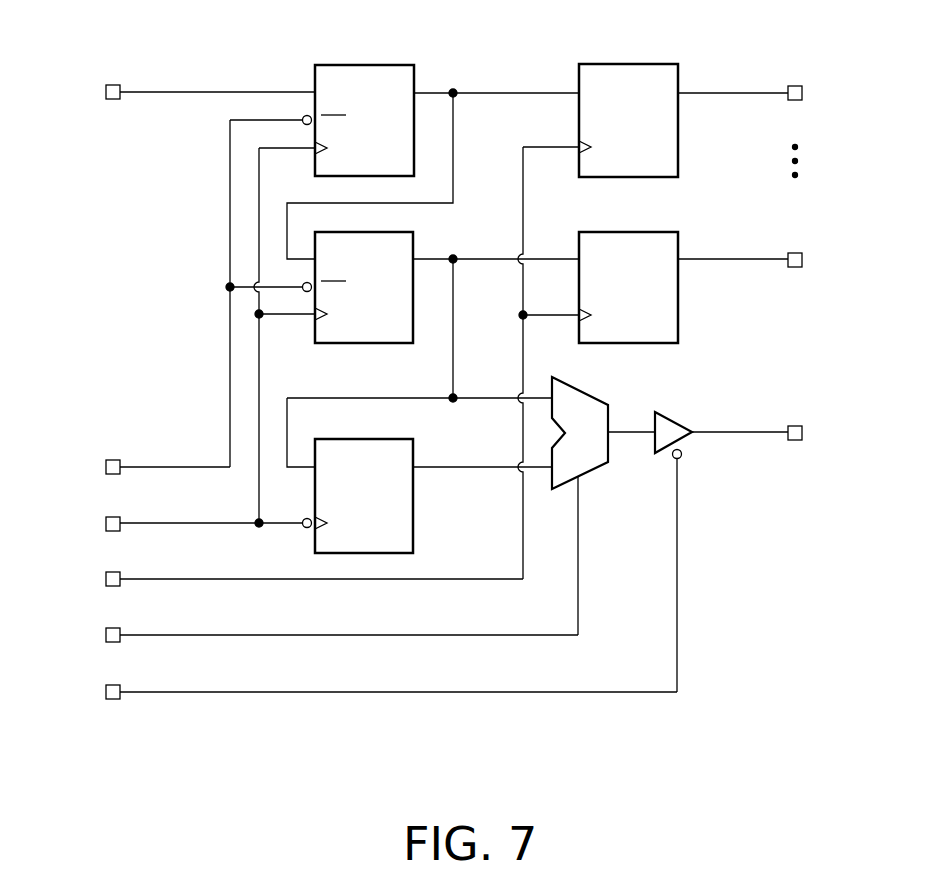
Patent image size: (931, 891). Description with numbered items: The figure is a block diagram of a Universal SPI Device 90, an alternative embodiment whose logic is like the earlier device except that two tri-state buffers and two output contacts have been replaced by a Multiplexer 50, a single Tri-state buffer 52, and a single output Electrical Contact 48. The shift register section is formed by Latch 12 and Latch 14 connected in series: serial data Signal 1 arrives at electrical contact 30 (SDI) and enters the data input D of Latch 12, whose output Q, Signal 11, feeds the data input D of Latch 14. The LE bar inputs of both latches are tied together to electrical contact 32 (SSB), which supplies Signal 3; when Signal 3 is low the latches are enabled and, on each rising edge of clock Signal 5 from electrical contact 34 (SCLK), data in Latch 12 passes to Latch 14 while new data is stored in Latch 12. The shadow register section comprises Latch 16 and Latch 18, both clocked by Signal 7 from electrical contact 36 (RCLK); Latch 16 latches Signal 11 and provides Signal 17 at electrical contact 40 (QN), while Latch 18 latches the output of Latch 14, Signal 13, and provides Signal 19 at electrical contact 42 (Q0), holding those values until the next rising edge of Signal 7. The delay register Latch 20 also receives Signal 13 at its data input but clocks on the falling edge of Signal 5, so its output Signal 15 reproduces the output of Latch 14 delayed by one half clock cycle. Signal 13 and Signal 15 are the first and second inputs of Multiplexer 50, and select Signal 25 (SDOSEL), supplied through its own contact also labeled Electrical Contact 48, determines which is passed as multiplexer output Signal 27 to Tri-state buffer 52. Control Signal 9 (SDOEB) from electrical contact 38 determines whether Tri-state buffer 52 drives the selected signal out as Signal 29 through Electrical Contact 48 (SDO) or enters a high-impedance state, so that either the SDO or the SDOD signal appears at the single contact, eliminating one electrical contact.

The serial data input signal 1 is at (187, 92).
The latch enable signal 3 is at (187, 467).
The clock signal 5 is at (191, 523).
The clock signal 7 is at (191, 579).
The control signal 9 is at (191, 692).
The data output signal of Latch 12 11 is at (433, 92).
The latch 12 is at (383, 159).
The data output signal of Latch 14 13 is at (433, 259).
The latch 14 is at (383, 326).
The data output signal of Latch 20 15 is at (433, 467).
The latch 16 is at (647, 152).
The output signal QN 17 is at (703, 92).
The latch 18 is at (647, 324).
The output signal Q0 19 is at (703, 258).
The latch 20 is at (383, 532).
The select signal 25 is at (191, 635).
The multiplexer output signal 27 is at (615, 432).
The output signal 29 is at (710, 432).
The electrical contact 30 is at (113, 85).
The electrical contact 32 is at (113, 460).
The electrical contact 34 is at (113, 517).
The electrical contact 36 is at (113, 572).
The electrical contact 38 is at (113, 685).
The electrical contact 40 is at (795, 86).
The electrical contact 42 is at (795, 253).
The electrical contact 48 is at (113, 628).
The multiplexer 50 is at (600, 469).
The tri-state buffer 52 is at (669, 418).
The Universal SPI Device 90 is at (480, 787).